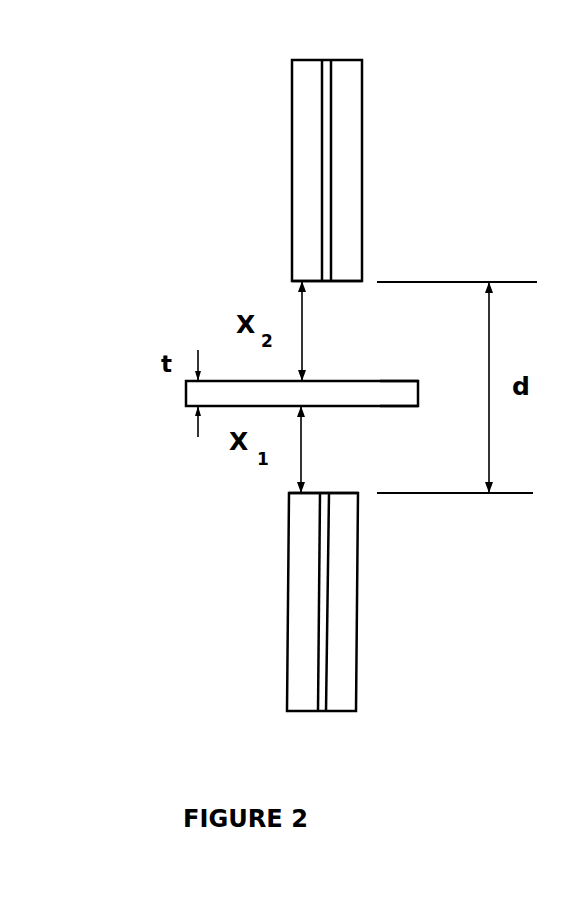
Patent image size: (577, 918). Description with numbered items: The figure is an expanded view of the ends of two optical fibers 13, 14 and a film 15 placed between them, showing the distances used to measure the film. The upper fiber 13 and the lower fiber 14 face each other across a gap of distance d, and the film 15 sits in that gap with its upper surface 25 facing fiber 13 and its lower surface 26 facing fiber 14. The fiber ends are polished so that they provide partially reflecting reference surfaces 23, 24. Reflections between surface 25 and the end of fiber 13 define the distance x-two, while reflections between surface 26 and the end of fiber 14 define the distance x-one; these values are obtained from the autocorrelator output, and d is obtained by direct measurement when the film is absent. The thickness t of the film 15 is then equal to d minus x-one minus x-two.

The fiber 13 is at (361, 220).
The fiber 14 is at (358, 530).
The film 15 is at (185, 394).
The partially reflecting reference surface 23 is at (350, 282).
The partially reflecting reference surface 24 is at (342, 490).
The surface of the film 25 is at (400, 379).
The surface of the film 26 is at (400, 409).